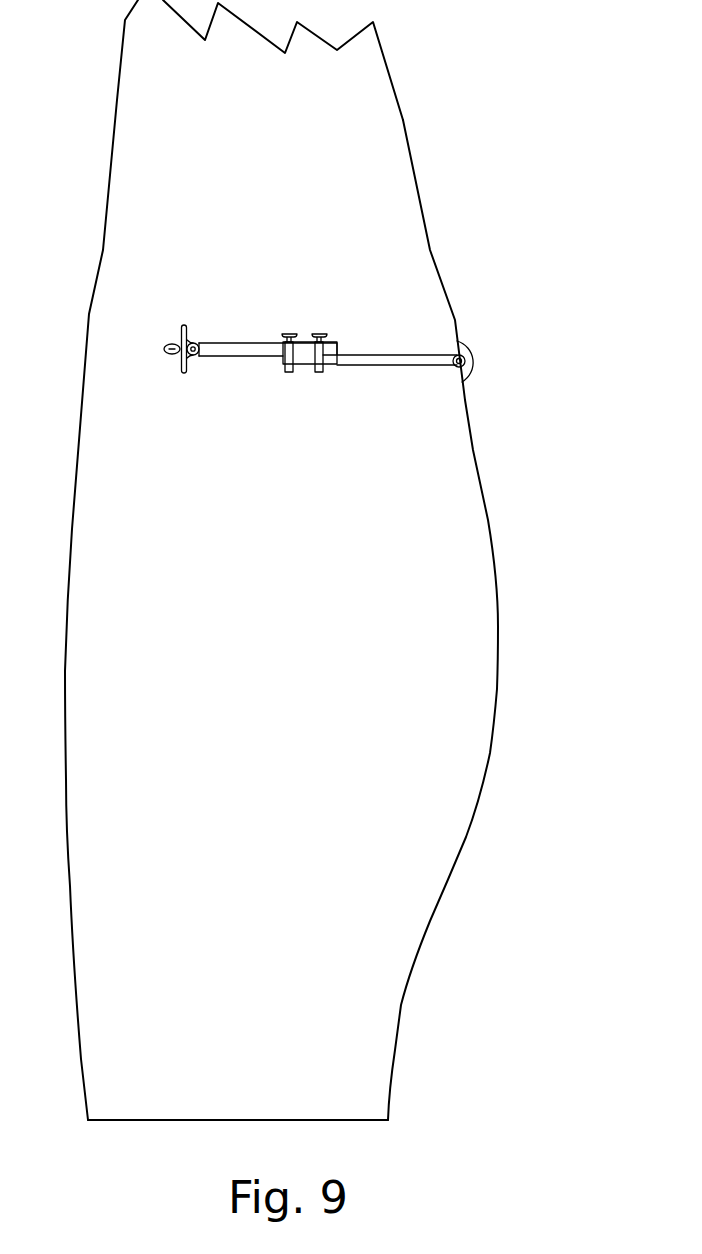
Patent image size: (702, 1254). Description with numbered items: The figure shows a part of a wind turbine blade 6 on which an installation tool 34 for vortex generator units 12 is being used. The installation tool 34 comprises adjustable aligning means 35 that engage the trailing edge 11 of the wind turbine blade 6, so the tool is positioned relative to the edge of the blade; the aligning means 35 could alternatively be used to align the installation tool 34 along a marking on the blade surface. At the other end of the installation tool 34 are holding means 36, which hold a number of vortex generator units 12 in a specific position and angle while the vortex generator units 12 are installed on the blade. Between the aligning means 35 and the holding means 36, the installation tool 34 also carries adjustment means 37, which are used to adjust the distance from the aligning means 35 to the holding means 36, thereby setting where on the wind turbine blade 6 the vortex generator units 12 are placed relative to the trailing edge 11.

The wind turbine blade 6 is at (281, 638).
The trailing edge 11 is at (475, 450).
The vortex generator unit 12 is at (166, 346).
The installation tool 34 is at (385, 362).
The adjustable aligning means 35 is at (461, 342).
The holding means 36 is at (187, 368).
The adjustment means 37 is at (318, 332).